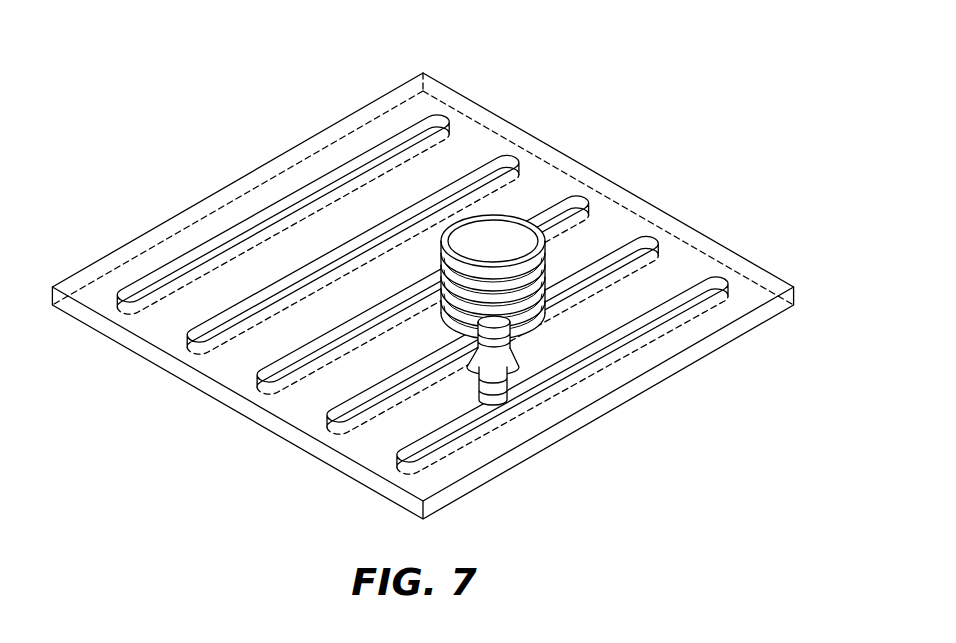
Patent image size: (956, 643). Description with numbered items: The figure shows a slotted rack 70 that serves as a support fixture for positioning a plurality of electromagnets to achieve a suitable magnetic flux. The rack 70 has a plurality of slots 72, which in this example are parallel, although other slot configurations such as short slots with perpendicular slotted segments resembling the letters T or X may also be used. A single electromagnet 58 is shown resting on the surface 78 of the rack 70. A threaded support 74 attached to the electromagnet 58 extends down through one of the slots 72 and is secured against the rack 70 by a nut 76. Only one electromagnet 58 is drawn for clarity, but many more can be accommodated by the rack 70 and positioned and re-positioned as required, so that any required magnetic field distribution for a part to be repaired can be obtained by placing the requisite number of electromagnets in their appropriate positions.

The rack 70 is at (449, 296).
The surface 78 is at (742, 290).
The slots 72 is at (716, 280).
The electromagnet 58 is at (512, 237).
The nut 76 is at (514, 360).
The threaded support 74 is at (505, 384).